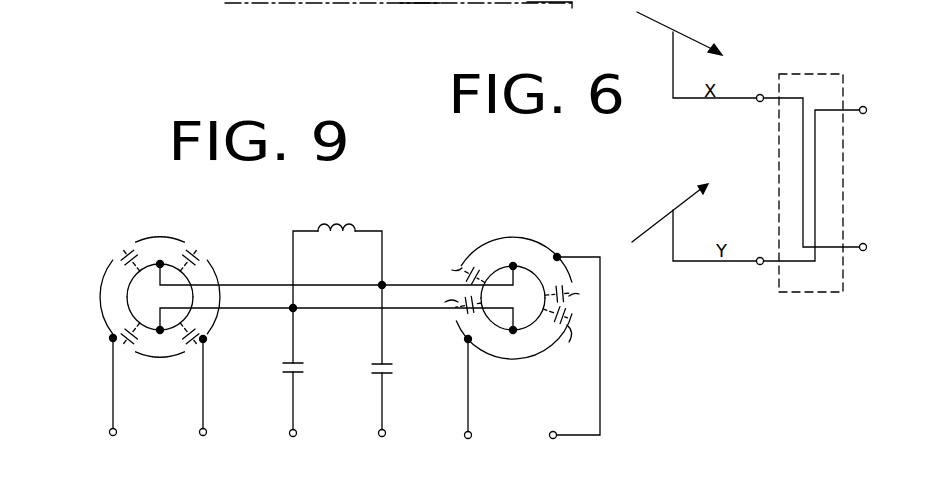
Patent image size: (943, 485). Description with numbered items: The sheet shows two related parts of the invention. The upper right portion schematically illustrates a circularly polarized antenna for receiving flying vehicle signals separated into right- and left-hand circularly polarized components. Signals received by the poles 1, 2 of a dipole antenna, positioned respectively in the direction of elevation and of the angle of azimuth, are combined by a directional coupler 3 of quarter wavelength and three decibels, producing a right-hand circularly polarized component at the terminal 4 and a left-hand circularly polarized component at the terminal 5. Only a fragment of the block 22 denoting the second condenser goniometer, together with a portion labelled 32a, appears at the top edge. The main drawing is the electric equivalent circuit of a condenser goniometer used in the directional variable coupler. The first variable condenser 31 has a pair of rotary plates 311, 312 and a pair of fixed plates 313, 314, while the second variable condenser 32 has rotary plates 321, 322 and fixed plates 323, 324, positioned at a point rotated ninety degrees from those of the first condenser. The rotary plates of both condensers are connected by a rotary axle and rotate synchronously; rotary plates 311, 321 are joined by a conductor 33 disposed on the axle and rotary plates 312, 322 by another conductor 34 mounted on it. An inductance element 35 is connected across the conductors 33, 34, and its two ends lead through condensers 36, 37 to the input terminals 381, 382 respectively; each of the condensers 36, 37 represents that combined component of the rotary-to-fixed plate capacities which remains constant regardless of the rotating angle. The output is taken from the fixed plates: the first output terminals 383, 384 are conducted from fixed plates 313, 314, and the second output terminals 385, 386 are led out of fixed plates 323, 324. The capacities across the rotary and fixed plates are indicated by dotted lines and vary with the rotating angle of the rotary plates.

In FIG. 6, the pole 1 is at (692, 34).
In FIG. 6, the pole 2 is at (681, 208).
In FIG. 6, the directional coupler 3 is at (813, 74).
In FIG. 6, the terminal 4 is at (865, 107).
In FIG. 6, the terminal 5 is at (865, 244).
In FIG. 6, the block 22 is at (440, 4).
In FIG. 6, the stator portion 32a is at (527, 3).
In FIG. 9, the first variable condenser 31 is at (163, 235).
In FIG. 9, the rotary plate 311 is at (138, 273).
In FIG. 9, the rotary plate 312 is at (163, 340).
In FIG. 9, the fixed plate 313 is at (109, 256).
In FIG. 9, the fixed plate 314 is at (214, 262).
In FIG. 9, the second variable condenser 32 is at (545, 238).
In FIG. 9, the rotary plate 321 is at (538, 274).
In FIG. 9, the rotary plate 322 is at (517, 333).
In FIG. 9, the fixed plate 323 is at (470, 243).
In FIG. 9, the fixed plate 324 is at (542, 355).
In FIG. 9, the conductor 33 is at (397, 282).
In FIG. 9, the conductor 34 is at (398, 312).
In FIG. 9, the inductance element 35 is at (338, 226).
In FIG. 9, the condenser 36 is at (283, 366).
In FIG. 9, the condenser 37 is at (392, 370).
In FIG. 9, the input terminal 381 is at (295, 421).
In FIG. 9, the input terminal 382 is at (385, 421).
In FIG. 9, the first output terminal 383 is at (117, 403).
In FIG. 9, the first output terminal 384 is at (208, 403).
In FIG. 9, the second output terminal 385 is at (470, 405).
In FIG. 9, the second output terminal 386 is at (570, 364).